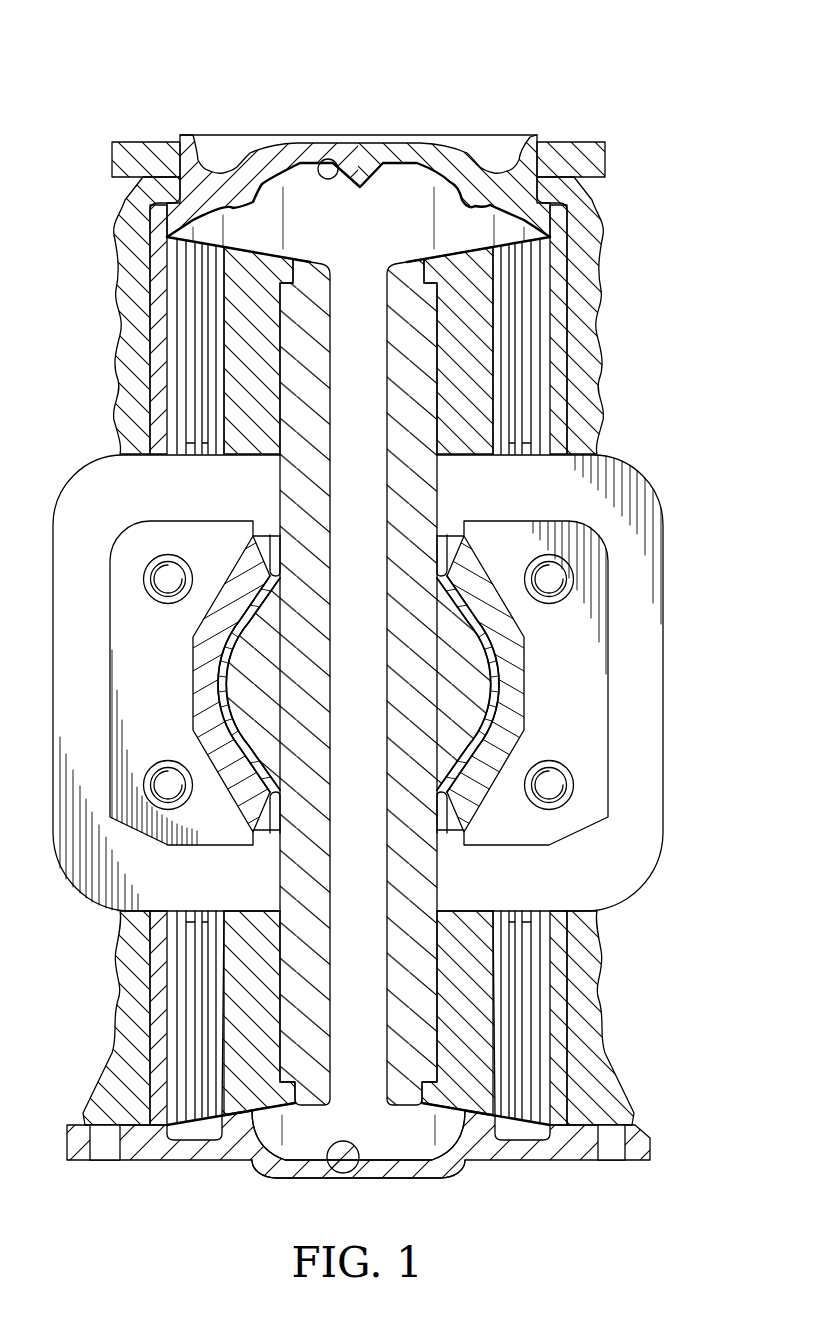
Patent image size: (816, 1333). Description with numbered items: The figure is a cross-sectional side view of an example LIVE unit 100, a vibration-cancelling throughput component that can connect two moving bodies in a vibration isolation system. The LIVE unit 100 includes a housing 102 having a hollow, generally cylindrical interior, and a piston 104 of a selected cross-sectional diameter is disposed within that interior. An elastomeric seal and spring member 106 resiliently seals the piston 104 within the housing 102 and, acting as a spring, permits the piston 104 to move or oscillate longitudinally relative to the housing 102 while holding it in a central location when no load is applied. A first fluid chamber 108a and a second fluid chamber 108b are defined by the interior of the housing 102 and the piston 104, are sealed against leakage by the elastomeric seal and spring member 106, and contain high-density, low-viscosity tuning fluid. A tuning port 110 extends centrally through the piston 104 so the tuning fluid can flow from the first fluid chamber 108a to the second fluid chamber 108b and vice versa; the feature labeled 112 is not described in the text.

The LIVE unit 100 is at (157, 50).
The housing 102 is at (573, 1150).
The piston 104 is at (315, 287).
The elastomeric seal and spring member 106 is at (185, 316).
The first fluid chamber 108a is at (263, 213).
The second fluid chamber 108b is at (300, 1133).
The tuning port 110 is at (367, 263).
The protrusion 112 is at (326, 159).